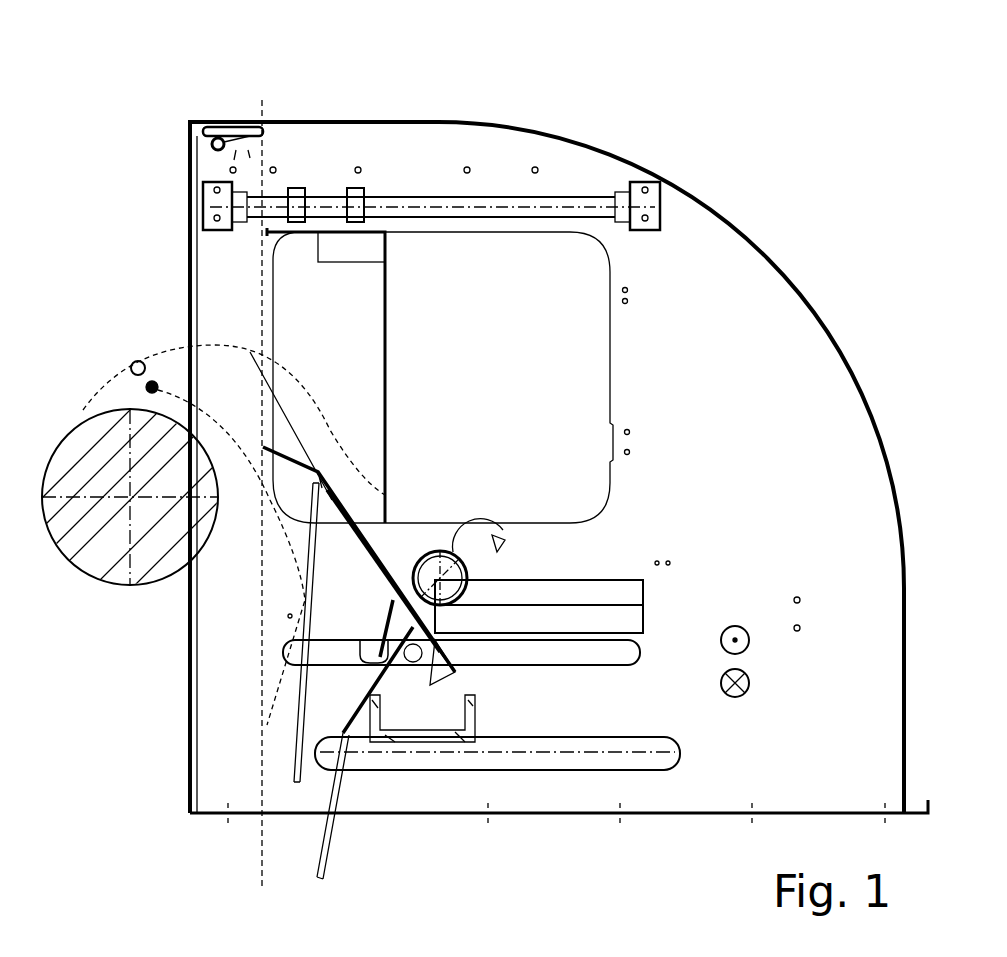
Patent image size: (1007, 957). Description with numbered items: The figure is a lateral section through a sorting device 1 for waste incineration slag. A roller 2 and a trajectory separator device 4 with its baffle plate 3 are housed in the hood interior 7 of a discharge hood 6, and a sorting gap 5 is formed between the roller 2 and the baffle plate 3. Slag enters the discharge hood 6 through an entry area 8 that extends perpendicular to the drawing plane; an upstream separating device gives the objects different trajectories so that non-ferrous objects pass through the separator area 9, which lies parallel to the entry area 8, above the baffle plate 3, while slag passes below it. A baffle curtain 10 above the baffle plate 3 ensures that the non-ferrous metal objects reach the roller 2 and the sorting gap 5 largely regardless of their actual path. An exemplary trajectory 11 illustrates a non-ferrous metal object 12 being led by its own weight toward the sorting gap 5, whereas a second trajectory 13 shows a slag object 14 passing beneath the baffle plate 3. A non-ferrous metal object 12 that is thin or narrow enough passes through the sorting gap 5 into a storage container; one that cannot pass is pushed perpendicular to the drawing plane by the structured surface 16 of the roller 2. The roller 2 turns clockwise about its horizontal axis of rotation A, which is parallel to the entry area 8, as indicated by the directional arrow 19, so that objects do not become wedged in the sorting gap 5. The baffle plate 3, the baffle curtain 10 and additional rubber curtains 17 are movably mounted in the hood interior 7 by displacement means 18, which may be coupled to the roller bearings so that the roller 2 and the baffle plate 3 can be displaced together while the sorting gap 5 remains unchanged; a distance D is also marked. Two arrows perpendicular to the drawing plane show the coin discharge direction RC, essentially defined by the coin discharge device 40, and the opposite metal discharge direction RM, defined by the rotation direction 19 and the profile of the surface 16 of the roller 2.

The sorting device 1 is at (832, 80).
The roller 2 is at (462, 575).
The baffle plate 3 is at (378, 540).
The trajectory separator device 4 is at (428, 447).
The sorting gap 5 is at (433, 610).
The discharge hood 6 is at (560, 140).
The hood interior 7 is at (740, 280).
The entry area 8 is at (190, 305).
The separator area 9 is at (262, 185).
The baffle curtain 10 is at (388, 300).
The trajectory of passing object 11 is at (290, 365).
The non-ferrous metal object 12 is at (137, 360).
The trajectory of non-passing object 13 is at (278, 687).
The slag object 14 is at (150, 387).
The surface 16 is at (443, 505).
The rubber curtain 17 is at (295, 620).
The displacement means 18 is at (363, 190).
The directional arrow 19 is at (455, 503).
The coin discharge device 40 is at (428, 738).
The axis of rotation A is at (445, 578).
The distance D is at (443, 627).
The metal discharge direction RM is at (730, 622).
The coin discharge direction RC is at (751, 701).